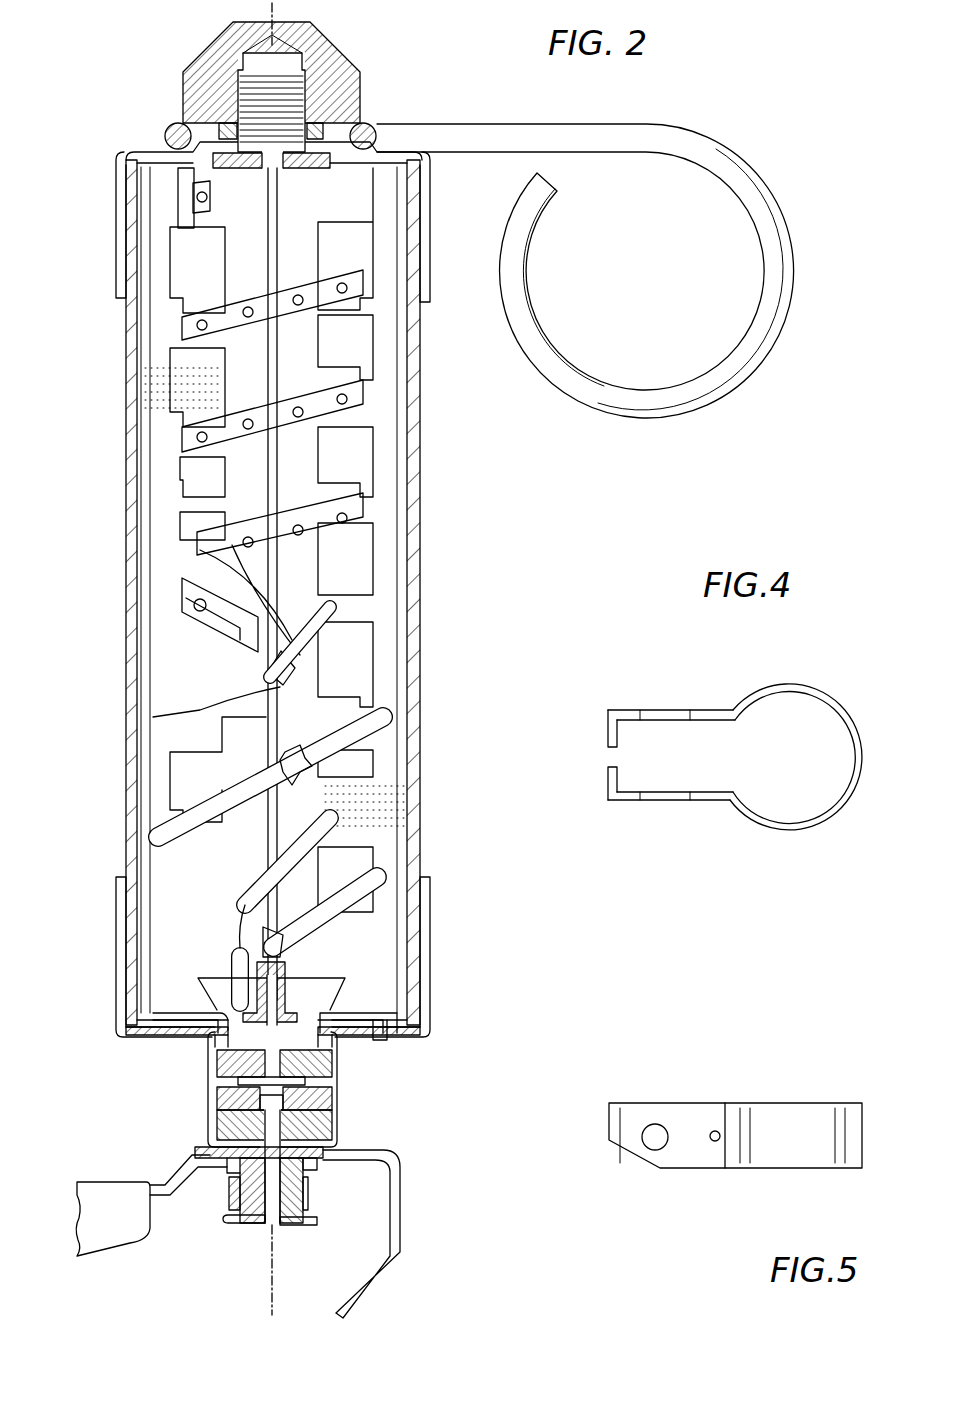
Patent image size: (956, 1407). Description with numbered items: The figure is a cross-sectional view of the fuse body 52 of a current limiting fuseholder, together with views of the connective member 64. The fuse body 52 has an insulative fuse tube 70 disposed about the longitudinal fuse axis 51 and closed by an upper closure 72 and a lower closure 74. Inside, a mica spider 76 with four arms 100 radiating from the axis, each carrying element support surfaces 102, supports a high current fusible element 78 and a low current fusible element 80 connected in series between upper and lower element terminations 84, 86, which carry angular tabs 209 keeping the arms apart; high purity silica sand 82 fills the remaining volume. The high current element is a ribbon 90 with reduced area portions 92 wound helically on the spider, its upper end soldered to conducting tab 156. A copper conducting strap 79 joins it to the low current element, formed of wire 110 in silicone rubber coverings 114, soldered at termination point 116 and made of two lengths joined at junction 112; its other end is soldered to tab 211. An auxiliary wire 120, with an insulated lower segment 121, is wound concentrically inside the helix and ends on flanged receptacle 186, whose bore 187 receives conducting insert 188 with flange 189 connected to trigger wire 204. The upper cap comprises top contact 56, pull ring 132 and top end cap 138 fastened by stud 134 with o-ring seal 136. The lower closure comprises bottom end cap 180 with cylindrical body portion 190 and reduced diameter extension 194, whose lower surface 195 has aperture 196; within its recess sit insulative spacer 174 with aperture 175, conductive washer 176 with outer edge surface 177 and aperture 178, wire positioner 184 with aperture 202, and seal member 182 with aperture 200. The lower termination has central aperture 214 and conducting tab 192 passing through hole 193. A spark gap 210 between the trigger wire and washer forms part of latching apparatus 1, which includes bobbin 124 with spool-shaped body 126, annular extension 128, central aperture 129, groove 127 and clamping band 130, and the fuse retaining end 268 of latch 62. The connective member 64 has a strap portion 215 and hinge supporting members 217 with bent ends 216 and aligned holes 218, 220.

In FIG. 2, the latching apparatus 1 is at (418, 1162).
In FIG. 2, the longitudinal fuse axis 51 is at (278, 10).
In FIG. 2, the fuse body 52 is at (118, 406).
In FIG. 2, the top contact 56 is at (330, 55).
In FIG. 2, the latch 62 is at (100, 1190).
In FIG. 4, the connective member 64 is at (720, 740).
In FIG. 5, the connective member 64 is at (731, 1148).
In FIG. 2, the insulative fuse tube 70 is at (133, 455).
In FIG. 2, the upper closure 72 is at (152, 135).
In FIG. 2, the lower closure 74 is at (103, 1037).
In FIG. 2, the spider 76 is at (347, 370).
In FIG. 2, the high current fusible element 78 is at (272, 427).
In FIG. 2, the conducting strap 79 is at (245, 647).
In FIG. 2, the low current fusible element 80 is at (270, 688).
In FIG. 2, the high purity silica sand 82 is at (178, 372).
In FIG. 2, the upper element termination 84 is at (400, 172).
In FIG. 2, the lower element termination 86 is at (397, 1016).
In FIG. 2, the ribbon element 90 is at (327, 297).
In FIG. 2, the reduced area portions 92 is at (247, 307).
In FIG. 2, the arms 100 is at (172, 228).
In FIG. 2, the element support surfaces 102 is at (172, 306).
In FIG. 2, the conducting wires 110 is at (297, 780).
In FIG. 2, the junction 112 is at (300, 752).
In FIG. 2, the silicone rubber coverings 114 is at (333, 898).
In FIG. 2, the termination point 116 is at (252, 631).
In FIG. 2, the auxiliary wire 120 is at (178, 177).
In FIG. 2, the lower segment 121 is at (332, 610).
In FIG. 2, the bobbin 124 is at (307, 1230).
In FIG. 2, the spool-shaped body 126 is at (308, 1193).
In FIG. 2, the radially formed groove 127 is at (262, 1223).
In FIG. 2, the annular extension 128 is at (313, 1163).
In FIG. 2, the central aperture 129 is at (276, 1236).
In FIG. 2, the clamping band 130 is at (308, 1203).
In FIG. 2, the pull ring 132 is at (752, 180).
In FIG. 2, the stud 134 is at (245, 78).
In FIG. 2, the o-ring seal 136 is at (225, 128).
In FIG. 2, the top end cap 138 is at (118, 209).
In FIG. 2, the conducting tab 156 is at (197, 217).
In FIG. 2, the insulative spacer 174 is at (315, 1160).
In FIG. 2, the central aperture 175 is at (336, 1130).
In FIG. 2, the conductive washer 176 is at (340, 1110).
In FIG. 2, the outer edge surface 177 is at (343, 1123).
In FIG. 2, the central aperture 178 is at (332, 1093).
In FIG. 2, the bottom end cap 180 is at (276, 941).
In FIG. 2, the seal member 182 is at (235, 1057).
In FIG. 2, the wire positioner 184 is at (235, 1088).
In FIG. 2, the flanged receptacle 186 is at (300, 958).
In FIG. 2, the bore 187 is at (333, 990).
In FIG. 2, the conducting insert 188 is at (332, 1035).
In FIG. 2, the flange 189 is at (333, 1078).
In FIG. 2, the cylindrical body portion 190 is at (432, 880).
In FIG. 2, the conducting tab 192 is at (382, 1033).
In FIG. 2, the hole 193 is at (382, 1047).
In FIG. 2, the reduced diameter extension 194 is at (333, 1068).
In FIG. 2, the lower surface 195 is at (278, 1017).
In FIG. 2, the aperture 196 is at (218, 1117).
In FIG. 2, the central aperture 200 is at (218, 1083).
In FIG. 2, the central aperture 202 is at (213, 1078).
In FIG. 2, the trigger wire 204 is at (228, 1220).
In FIG. 2, the angular tabs 209 is at (355, 976).
In FIG. 2, the spark gap 210 is at (230, 1097).
In FIG. 2, the conducting tab 211 is at (230, 985).
In FIG. 2, the central aperture 214 is at (200, 1038).
In FIG. 4, the strap portion 215 is at (838, 705).
In FIG. 5, the strap portion 215 is at (825, 1115).
In FIG. 4, the ends 216 is at (610, 730).
In FIG. 4, the hinge supporting members 217 is at (700, 800).
In FIG. 5, the hinge supporting members 217 is at (695, 1110).
In FIG. 4, the aligned holes 218 is at (655, 800).
In FIG. 5, the aligned holes 218 is at (650, 1140).
In FIG. 4, the aligned holes 220 is at (715, 710).
In FIG. 5, the aligned holes 220 is at (717, 1142).
In FIG. 2, the fuse retaining end 268 is at (388, 1244).